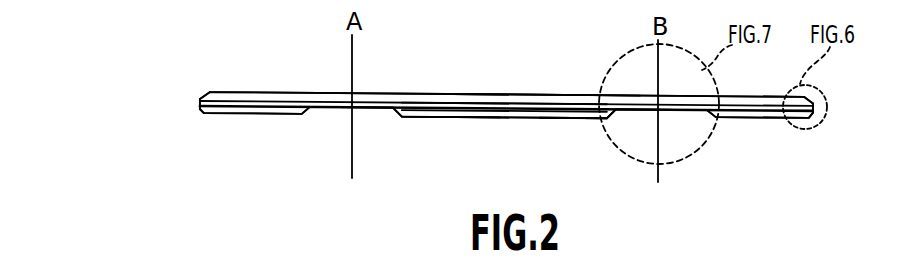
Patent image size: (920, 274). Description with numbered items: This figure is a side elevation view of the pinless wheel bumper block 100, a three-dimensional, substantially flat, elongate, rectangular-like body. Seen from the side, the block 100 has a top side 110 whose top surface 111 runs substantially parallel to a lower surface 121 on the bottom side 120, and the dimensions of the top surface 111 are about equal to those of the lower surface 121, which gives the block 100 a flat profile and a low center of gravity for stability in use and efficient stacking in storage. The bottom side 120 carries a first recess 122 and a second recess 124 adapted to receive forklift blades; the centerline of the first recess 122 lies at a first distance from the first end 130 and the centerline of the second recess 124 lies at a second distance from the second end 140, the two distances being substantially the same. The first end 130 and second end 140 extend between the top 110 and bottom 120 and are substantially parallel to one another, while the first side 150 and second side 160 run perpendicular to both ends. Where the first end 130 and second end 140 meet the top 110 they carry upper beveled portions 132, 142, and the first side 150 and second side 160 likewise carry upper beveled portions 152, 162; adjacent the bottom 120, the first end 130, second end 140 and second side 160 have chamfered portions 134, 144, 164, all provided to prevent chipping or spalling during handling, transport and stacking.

The block 100 is at (331, 53).
The top side 110 is at (233, 89).
The top surface 111 is at (540, 94).
The bottom side 120 is at (266, 119).
The lower surface 121 is at (573, 117).
The first recess 122 is at (338, 112).
The second recess 124 is at (676, 118).
The first end 130 is at (199, 104).
The upper beveled portion of first end 132 is at (201, 97).
The chamfered portion of first end 134 is at (205, 115).
The second end 140 is at (817, 108).
The upper beveled portion of second end 142 is at (813, 98).
The chamfered portion of second end 144 is at (815, 118).
The first side 150 is at (225, 272).
The upper beveled portion of first side 152 is at (292, 272).
The second side 160 is at (455, 104).
The upper beveled portion of second side 162 is at (503, 101).
The chamfered portion of second side 164 is at (412, 116).